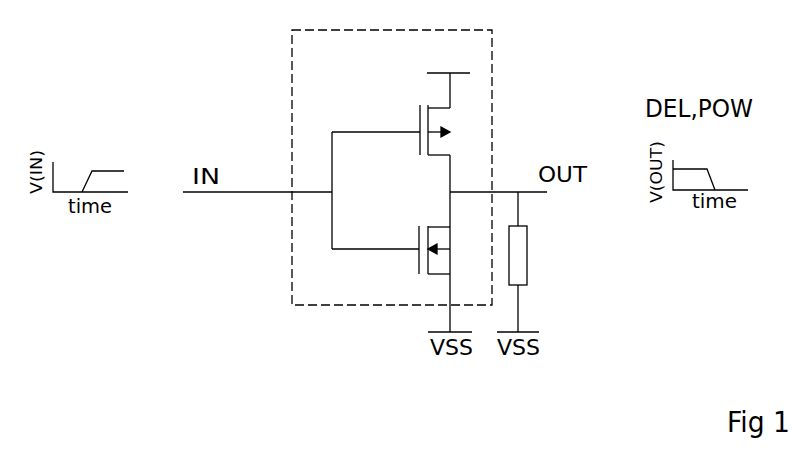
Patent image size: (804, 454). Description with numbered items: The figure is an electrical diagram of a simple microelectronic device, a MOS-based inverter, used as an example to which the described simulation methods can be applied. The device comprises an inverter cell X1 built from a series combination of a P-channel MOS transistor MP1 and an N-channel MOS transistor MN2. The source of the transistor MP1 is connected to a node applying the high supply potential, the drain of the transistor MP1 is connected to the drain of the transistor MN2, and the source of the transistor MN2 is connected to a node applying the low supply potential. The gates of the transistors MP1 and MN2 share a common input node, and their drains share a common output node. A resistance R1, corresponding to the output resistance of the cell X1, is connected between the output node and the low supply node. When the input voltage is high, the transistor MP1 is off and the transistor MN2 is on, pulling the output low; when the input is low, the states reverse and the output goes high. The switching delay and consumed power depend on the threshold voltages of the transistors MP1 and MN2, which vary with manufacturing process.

The inverter cell X1 is at (392, 181).
The P-channel MOS transistor MP1 is at (391, 126).
The N-channel MOS transistor MN2 is at (391, 253).
The resistance R1 is at (535, 262).